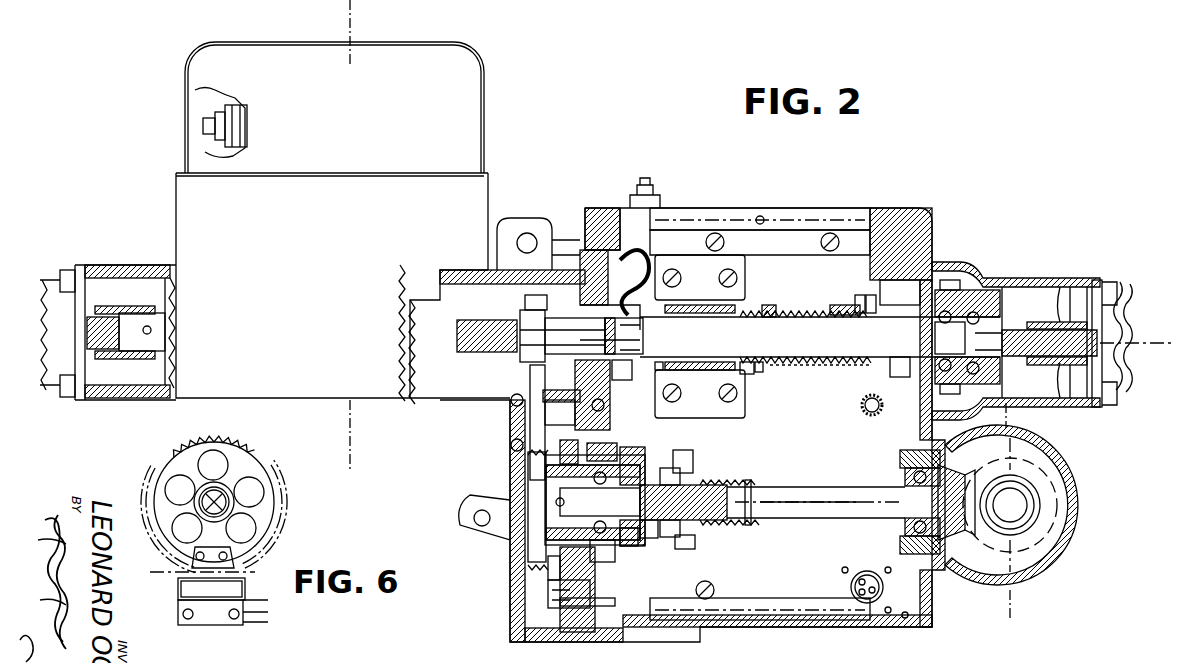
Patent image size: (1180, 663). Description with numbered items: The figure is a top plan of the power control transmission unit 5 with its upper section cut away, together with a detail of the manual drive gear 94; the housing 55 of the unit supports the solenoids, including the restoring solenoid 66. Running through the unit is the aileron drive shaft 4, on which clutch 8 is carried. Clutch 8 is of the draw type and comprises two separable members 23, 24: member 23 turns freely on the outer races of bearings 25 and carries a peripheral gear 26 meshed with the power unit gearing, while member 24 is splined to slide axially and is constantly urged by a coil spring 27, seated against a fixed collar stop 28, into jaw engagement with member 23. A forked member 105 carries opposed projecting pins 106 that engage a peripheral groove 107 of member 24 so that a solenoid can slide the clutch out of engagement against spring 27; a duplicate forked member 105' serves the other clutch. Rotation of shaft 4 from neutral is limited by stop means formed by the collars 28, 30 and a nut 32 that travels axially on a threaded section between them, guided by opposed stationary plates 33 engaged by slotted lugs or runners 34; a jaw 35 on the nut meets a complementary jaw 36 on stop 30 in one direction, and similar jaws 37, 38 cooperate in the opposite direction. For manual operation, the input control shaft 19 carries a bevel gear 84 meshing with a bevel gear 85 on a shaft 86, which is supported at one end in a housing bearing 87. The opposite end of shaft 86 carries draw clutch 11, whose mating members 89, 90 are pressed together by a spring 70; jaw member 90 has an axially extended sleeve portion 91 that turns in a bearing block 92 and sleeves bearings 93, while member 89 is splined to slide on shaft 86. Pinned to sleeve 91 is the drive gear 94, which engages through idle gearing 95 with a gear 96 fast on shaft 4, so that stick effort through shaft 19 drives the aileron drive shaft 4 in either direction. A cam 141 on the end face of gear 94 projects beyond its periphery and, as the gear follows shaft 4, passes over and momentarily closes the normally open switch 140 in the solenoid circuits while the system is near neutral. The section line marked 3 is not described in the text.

In FIG. 2, the section line 3- 3 is at (1000, 417).
In FIG. 2, the aileron drive shaft 4 is at (18, 355).
In FIG. 2, the power control transmission unit 5 is at (378, 15).
In FIG. 2, the clutch 8 is at (897, 280).
In FIG. 2, the draw clutch 11 is at (660, 446).
In FIG. 2, the input control shaft 19 is at (1027, 515).
In FIG. 2, the clutch member 23 is at (897, 375).
In FIG. 2, the clutch member 24 is at (883, 402).
In FIG. 2, the bearings 25 is at (945, 320).
In FIG. 2, the peripheral gear 26 is at (945, 290).
In FIG. 2, the coil spring 27 is at (828, 370).
In FIG. 2, the collar stop 28 is at (776, 305).
In FIG. 2, the collar stop 30 is at (628, 315).
In FIG. 2, the nut 32 is at (712, 318).
In FIG. 2, the stationary plates 33 is at (712, 290).
In FIG. 2, the slotted lugs or runners 34 is at (695, 378).
In FIG. 2, the jaw 35 is at (665, 378).
In FIG. 2, the jaw 36 is at (622, 370).
In FIG. 2, the jaw 37 is at (748, 372).
In FIG. 2, the jaw 38 is at (768, 372).
In FIG. 2, the housing 55 is at (485, 96).
In FIG. 2, the restoring solenoid 66 is at (248, 118).
In FIG. 2, the spring 70 is at (700, 485).
In FIG. 2, the bevel gear 84 is at (1085, 482).
In FIG. 2, the bevel gear 85 is at (955, 540).
In FIG. 2, the shaft 86 is at (840, 514).
In FIG. 2, the housing bearing 87 is at (905, 482).
In FIG. 2, the clutch member 89 is at (657, 540).
In FIG. 2, the jaw member 90 is at (628, 545).
In FIG. 2, the sleeve portion 91 is at (560, 470).
In FIG. 2, the bearing block 92 is at (612, 562).
In FIG. 2, the bearings 93 is at (615, 510).
In FIG. 2, the drive gear 94 is at (553, 537).
In FIG. 6, the drive gear 94 is at (262, 448).
In FIG. 2, the idle gearing 95 is at (565, 400).
In FIG. 2, the gear 96 is at (555, 360).
In FIG. 2, the forked member 105 is at (857, 290).
In FIG. 2, the forked member 105' is at (713, 557).
In FIG. 2, the projecting pins 106 is at (872, 300).
In FIG. 2, the peripheral groove 107 is at (855, 312).
In FIG. 2, the switch 140 is at (548, 594).
In FIG. 6, the switch 140 is at (180, 594).
In FIG. 2, the cam 141 is at (548, 565).
In FIG. 6, the cam 141 is at (195, 556).